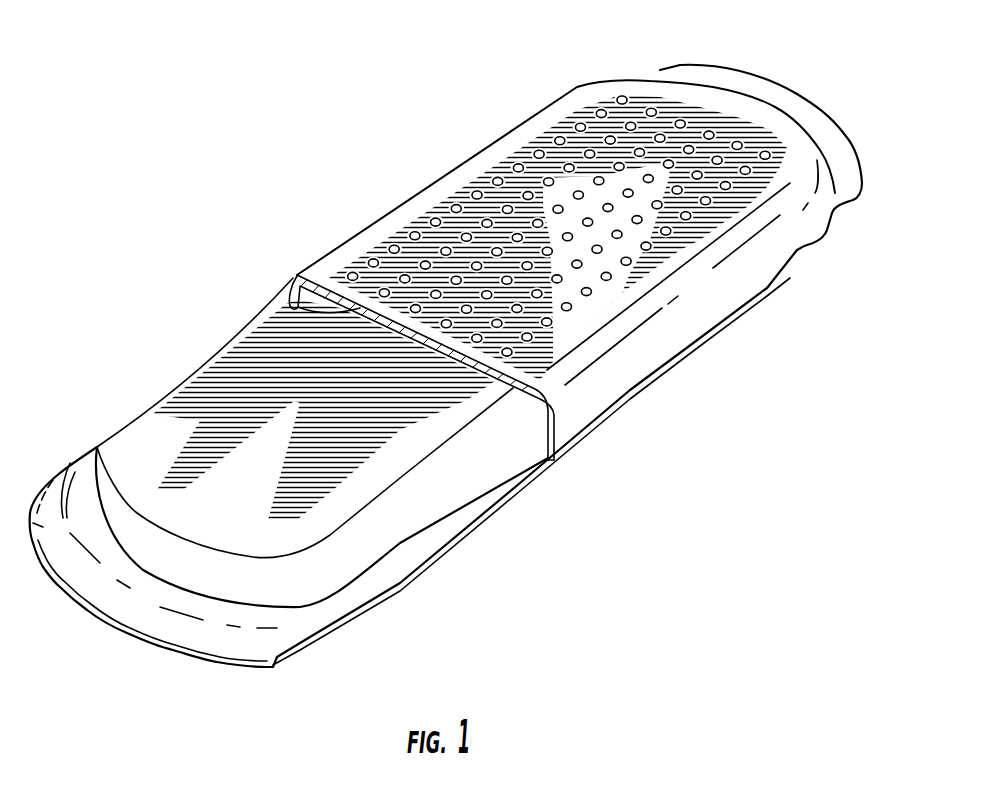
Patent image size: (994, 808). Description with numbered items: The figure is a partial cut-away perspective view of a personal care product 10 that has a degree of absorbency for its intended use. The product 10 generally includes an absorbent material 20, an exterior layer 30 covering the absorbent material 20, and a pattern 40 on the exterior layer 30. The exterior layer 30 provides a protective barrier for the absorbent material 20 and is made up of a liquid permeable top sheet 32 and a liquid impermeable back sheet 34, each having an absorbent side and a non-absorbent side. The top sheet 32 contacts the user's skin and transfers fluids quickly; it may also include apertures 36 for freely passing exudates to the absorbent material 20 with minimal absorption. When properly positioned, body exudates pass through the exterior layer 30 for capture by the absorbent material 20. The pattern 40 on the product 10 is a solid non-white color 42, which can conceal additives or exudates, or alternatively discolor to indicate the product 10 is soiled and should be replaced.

The personal care product 10 is at (343, 148).
The absorbent material 20 is at (195, 570).
The exterior layer 30 is at (529, 236).
The top sheet 32 is at (294, 306).
The back sheet 34 is at (425, 565).
The apertures 36 is at (477, 190).
The pattern 40 is at (742, 122).
The solid non-white color 42 is at (640, 101).